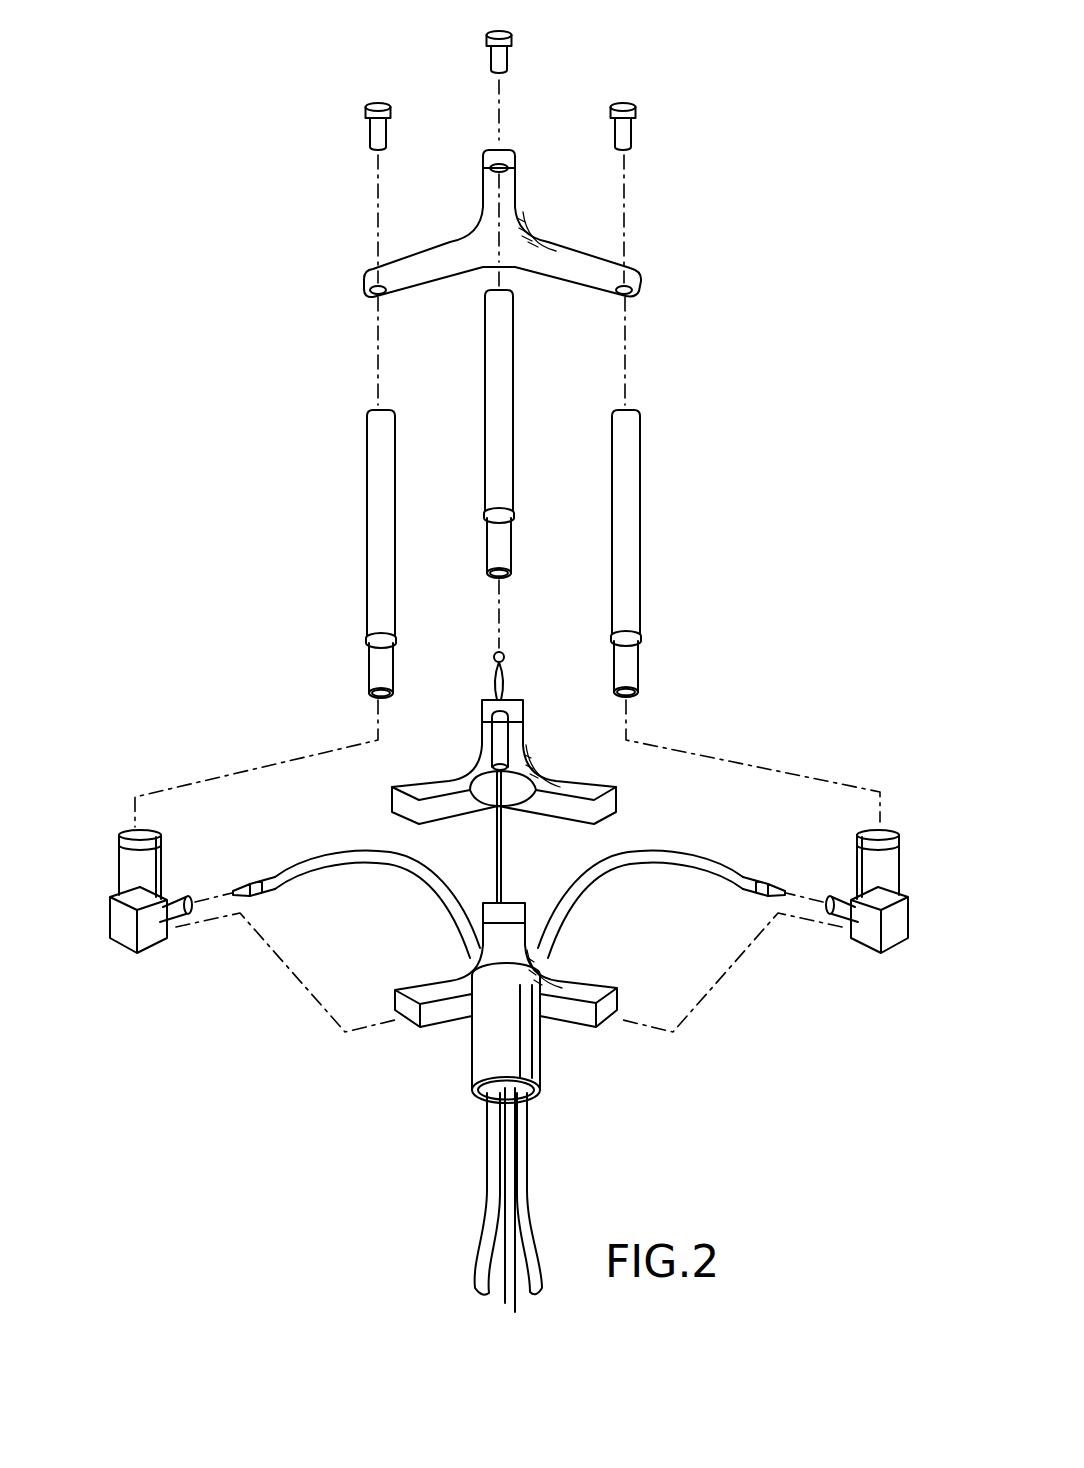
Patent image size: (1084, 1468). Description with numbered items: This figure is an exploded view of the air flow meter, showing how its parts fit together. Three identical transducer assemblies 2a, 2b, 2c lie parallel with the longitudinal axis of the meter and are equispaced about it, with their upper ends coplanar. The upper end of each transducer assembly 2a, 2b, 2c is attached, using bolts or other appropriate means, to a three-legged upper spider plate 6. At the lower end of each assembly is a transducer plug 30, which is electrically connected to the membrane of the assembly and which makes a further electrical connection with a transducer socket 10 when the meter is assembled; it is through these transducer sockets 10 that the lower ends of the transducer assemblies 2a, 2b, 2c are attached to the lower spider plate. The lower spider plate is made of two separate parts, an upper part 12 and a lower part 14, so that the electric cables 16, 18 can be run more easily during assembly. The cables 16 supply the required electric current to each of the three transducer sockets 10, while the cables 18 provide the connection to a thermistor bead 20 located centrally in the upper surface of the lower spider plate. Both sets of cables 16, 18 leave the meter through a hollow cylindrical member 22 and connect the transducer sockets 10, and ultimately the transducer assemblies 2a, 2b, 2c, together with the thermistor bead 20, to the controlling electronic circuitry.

The transducer assembly 2a is at (500, 333).
The transducer assembly 2b is at (376, 483).
The transducer assembly 2c is at (628, 473).
The upper spider plate 6 is at (635, 267).
The transducer socket 10 is at (123, 873).
The upper part 12 is at (603, 793).
The lower part 14 is at (583, 1023).
The electric cables 16 is at (317, 853).
The electric cables 18 is at (505, 857).
The thermistor bead 20 is at (505, 650).
The hollow cylindrical member 22 is at (480, 1047).
The transducer plug 30 is at (505, 550).